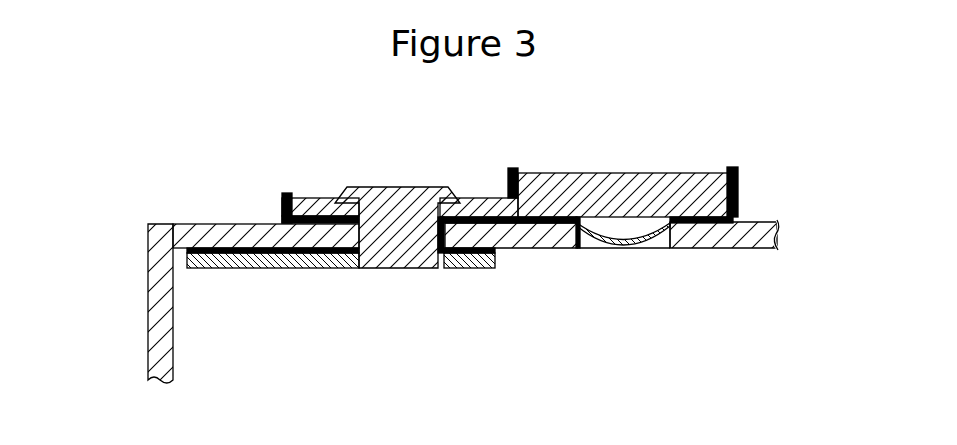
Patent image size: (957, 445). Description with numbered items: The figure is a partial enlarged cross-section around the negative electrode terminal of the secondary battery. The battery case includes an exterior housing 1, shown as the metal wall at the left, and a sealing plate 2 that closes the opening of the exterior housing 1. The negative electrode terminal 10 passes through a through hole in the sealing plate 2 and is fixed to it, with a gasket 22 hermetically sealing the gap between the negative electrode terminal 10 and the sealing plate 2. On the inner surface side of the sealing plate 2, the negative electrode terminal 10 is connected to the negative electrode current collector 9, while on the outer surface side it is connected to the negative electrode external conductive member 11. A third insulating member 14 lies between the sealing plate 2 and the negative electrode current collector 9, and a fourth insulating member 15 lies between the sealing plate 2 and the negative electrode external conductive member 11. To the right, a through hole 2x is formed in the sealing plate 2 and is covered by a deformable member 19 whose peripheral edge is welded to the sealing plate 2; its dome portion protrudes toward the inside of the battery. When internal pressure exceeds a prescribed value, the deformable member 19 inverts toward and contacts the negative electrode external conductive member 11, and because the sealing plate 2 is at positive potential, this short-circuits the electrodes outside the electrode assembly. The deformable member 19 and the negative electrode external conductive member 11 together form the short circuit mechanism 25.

The exterior housing 1 is at (150, 300).
The sealing plate 2 is at (229, 224).
The through hole 2x is at (657, 246).
The negative electrode current collector 9 is at (276, 268).
The negative electrode terminal 10 is at (405, 187).
The negative electrode external conductive member 11 is at (622, 173).
The third insulating member 14 is at (208, 256).
The fourth insulating member 15 is at (313, 198).
The deformable member 19 is at (613, 244).
The gasket 22 is at (508, 252).
The short circuit mechanism 25 is at (599, 155).